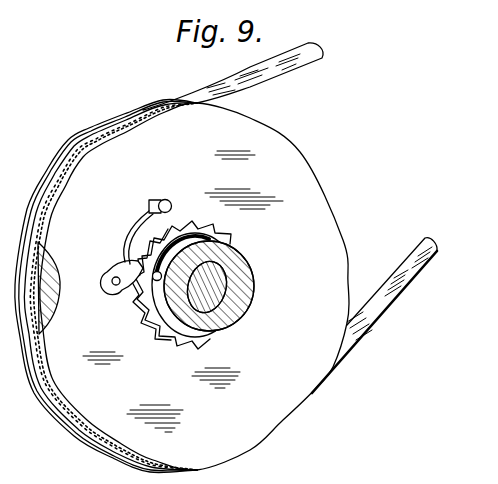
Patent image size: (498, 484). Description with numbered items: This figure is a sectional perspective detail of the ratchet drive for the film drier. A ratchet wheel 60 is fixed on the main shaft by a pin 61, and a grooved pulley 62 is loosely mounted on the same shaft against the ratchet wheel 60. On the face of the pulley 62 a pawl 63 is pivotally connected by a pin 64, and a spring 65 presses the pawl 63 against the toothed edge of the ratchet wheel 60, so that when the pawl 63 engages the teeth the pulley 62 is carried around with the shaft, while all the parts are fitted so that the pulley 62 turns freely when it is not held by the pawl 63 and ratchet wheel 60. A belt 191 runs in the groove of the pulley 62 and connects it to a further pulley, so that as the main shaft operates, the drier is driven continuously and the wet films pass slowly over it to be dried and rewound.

The ratchet wheel 60 is at (142, 322).
The pin 61 is at (157, 281).
The grooved pulley 62 is at (336, 211).
The pawl 63 is at (112, 268).
The pin 64 is at (113, 290).
The spring 65 is at (133, 230).
The belt 191 is at (293, 71).